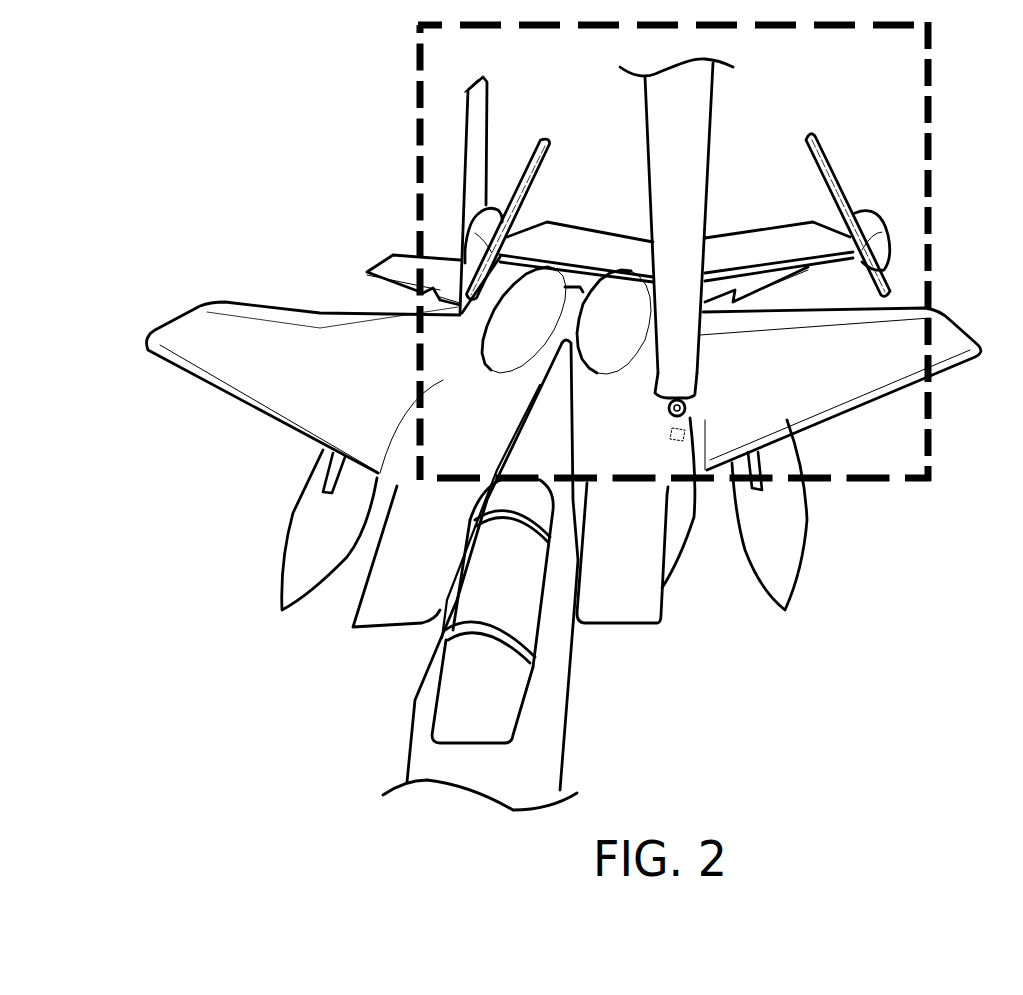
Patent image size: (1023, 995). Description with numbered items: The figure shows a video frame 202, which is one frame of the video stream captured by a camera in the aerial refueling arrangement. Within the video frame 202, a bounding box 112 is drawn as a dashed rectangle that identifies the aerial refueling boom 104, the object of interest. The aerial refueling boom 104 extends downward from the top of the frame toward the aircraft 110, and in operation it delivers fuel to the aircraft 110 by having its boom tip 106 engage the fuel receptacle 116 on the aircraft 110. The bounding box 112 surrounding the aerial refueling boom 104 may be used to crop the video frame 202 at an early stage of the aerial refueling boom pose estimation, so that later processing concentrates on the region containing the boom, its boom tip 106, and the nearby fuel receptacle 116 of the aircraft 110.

The aerial refueling boom 104 is at (657, 152).
The boom tip 106 is at (762, 492).
The aircraft 110 is at (262, 372).
The bounding box 112 is at (932, 193).
The fuel receptacle 116 is at (679, 443).
The video frame 202 is at (258, 72).